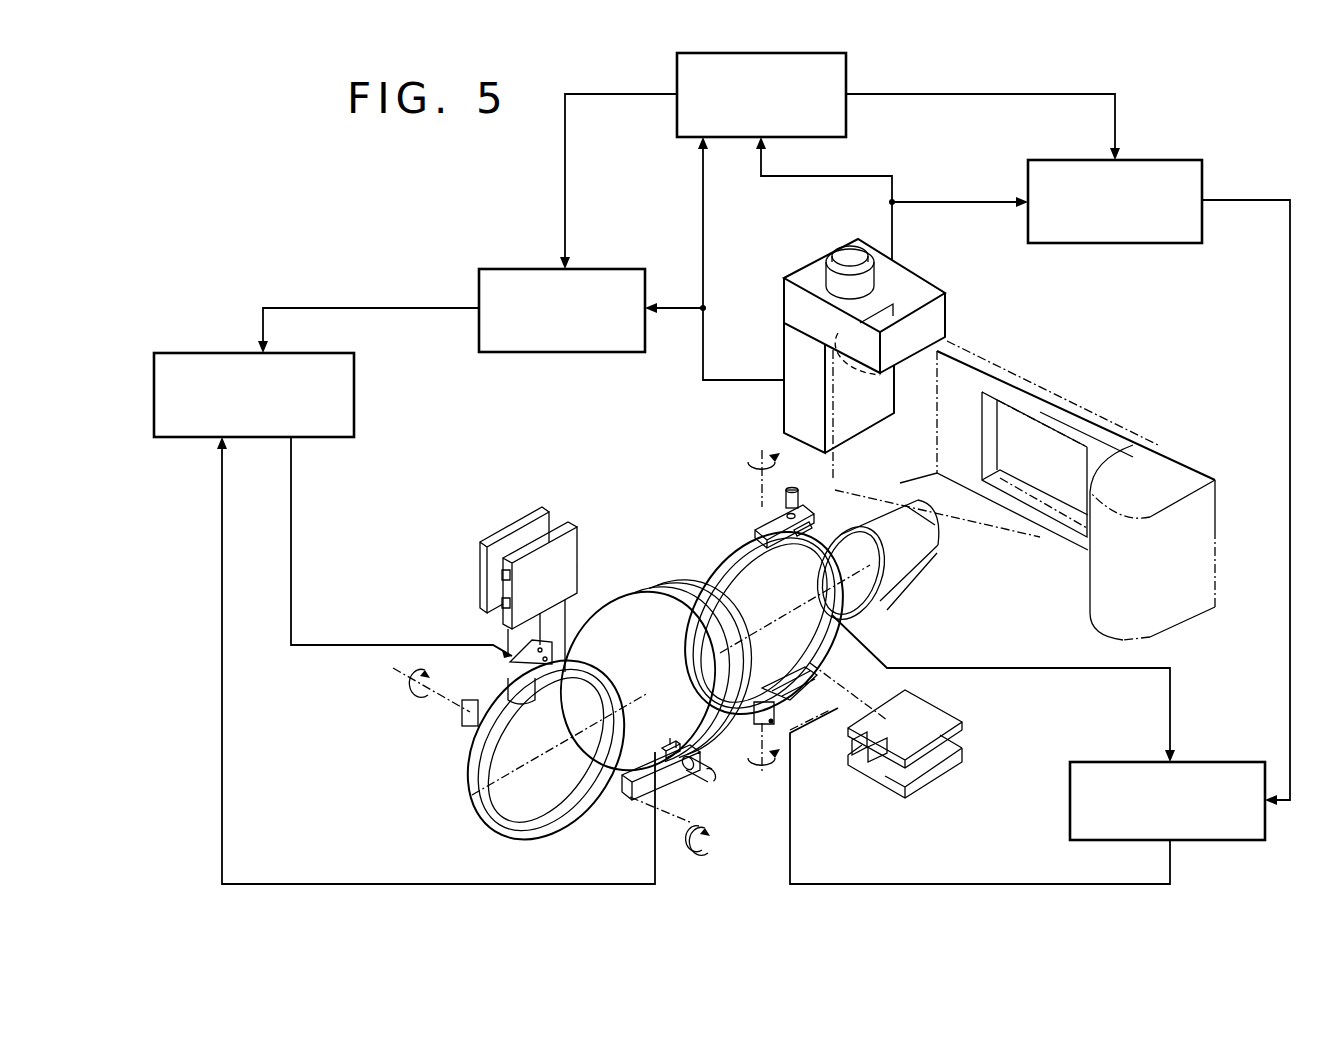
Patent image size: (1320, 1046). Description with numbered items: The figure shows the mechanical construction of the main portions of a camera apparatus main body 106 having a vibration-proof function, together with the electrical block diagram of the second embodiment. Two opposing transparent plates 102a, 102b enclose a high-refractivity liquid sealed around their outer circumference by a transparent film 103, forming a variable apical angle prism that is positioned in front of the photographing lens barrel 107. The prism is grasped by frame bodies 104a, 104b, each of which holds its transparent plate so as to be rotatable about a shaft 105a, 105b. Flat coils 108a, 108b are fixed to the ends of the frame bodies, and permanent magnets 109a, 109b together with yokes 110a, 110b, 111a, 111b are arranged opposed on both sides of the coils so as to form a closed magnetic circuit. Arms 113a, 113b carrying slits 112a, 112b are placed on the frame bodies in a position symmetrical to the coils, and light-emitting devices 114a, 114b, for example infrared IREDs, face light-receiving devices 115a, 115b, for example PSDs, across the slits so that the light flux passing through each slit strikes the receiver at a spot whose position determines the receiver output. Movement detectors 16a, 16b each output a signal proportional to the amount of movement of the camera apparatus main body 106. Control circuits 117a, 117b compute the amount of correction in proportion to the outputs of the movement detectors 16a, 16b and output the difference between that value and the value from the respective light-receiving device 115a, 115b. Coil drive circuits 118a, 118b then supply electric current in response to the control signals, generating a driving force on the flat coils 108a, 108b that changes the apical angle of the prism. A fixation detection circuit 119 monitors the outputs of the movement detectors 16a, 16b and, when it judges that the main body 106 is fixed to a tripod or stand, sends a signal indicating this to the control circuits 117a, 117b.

The movement detector 16a is at (785, 346).
The movement detector 16b is at (947, 322).
The transparent plate 102a is at (600, 612).
The transparent plate 102b is at (643, 598).
The transparent film 103 is at (660, 614).
The frame body 104a is at (508, 808).
The frame body 104b is at (850, 665).
The shaft 105a is at (716, 850).
The shaft 105b is at (766, 787).
The camera apparatus main body 106 is at (1160, 462).
The photographing lens barrel 107 is at (937, 563).
The flat coil 108a is at (525, 702).
The flat coil 108b is at (795, 680).
The permanent magnet 109a is at (502, 602).
The permanent magnet 109b is at (880, 760).
The yoke 110a is at (580, 536).
The yoke 110b is at (955, 725).
The yoke 111a is at (480, 545).
The yoke 111b is at (948, 772).
The slit 112a is at (690, 745).
The slit 112b is at (778, 502).
The arm 113a is at (628, 808).
The arm 113b is at (770, 526).
The light-emitting device 114a is at (705, 780).
The light-emitting device 114b is at (802, 512).
The light-receiving device 115a is at (671, 746).
The light-receiving device 115b is at (935, 533).
The control circuit 117a is at (500, 268).
The control circuit 117b is at (1148, 160).
The coil drive circuit 118a is at (170, 353).
The coil drive circuit 118b is at (1198, 762).
The fixation detection circuit 119 is at (846, 76).